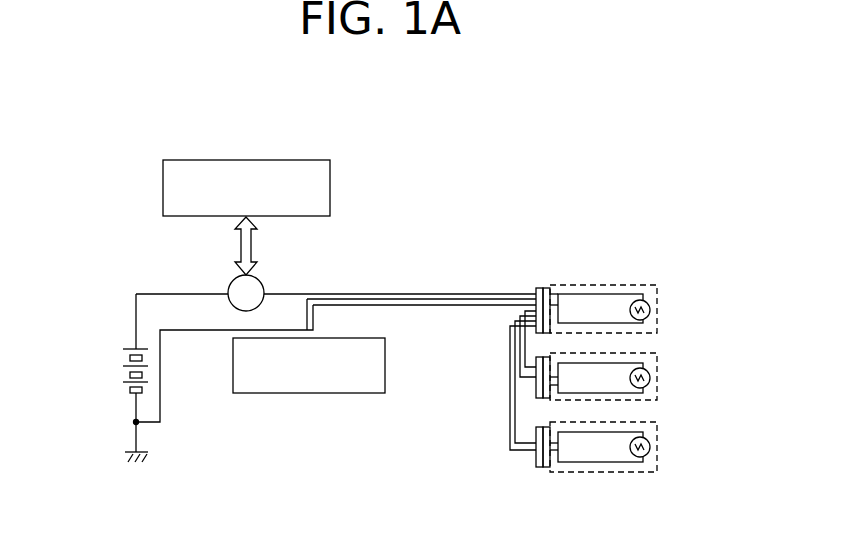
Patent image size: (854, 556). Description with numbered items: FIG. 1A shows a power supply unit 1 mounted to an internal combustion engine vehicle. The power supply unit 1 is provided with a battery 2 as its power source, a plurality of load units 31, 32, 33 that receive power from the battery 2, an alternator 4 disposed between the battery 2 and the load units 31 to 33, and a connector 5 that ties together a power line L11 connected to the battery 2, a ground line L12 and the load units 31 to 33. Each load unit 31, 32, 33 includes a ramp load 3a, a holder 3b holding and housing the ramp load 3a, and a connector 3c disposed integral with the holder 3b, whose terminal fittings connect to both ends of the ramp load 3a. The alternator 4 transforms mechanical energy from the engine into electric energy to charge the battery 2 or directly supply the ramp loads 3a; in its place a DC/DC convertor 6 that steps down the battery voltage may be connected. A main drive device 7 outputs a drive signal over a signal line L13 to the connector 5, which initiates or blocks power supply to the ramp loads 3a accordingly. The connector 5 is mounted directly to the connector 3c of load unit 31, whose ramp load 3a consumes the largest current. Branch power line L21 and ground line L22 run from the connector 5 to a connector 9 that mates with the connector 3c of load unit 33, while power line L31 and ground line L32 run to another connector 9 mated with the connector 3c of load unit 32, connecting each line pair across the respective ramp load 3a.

The power supply unit 1 is at (537, 126).
The battery 2 is at (124, 347).
The alternator 4 is at (233, 279).
The connector 5 is at (537, 288).
The DC/DC convertor 6 is at (275, 158).
The main drive device 7 is at (316, 395).
The connector 9 is at (517, 386).
The load unit 31 is at (660, 288).
The load unit 32 is at (660, 357).
The load unit 33 is at (660, 426).
The ramp load 3a is at (650, 310).
The holder 3b is at (660, 333).
The connector 3c is at (547, 288).
The power line L11 is at (462, 293).
The ground line L12 is at (405, 298).
The signal line L13 is at (350, 304).
The power line L21 is at (509, 401).
The ground line L22 is at (510, 430).
The power line L31 is at (514, 321).
The ground line L32 is at (519, 347).